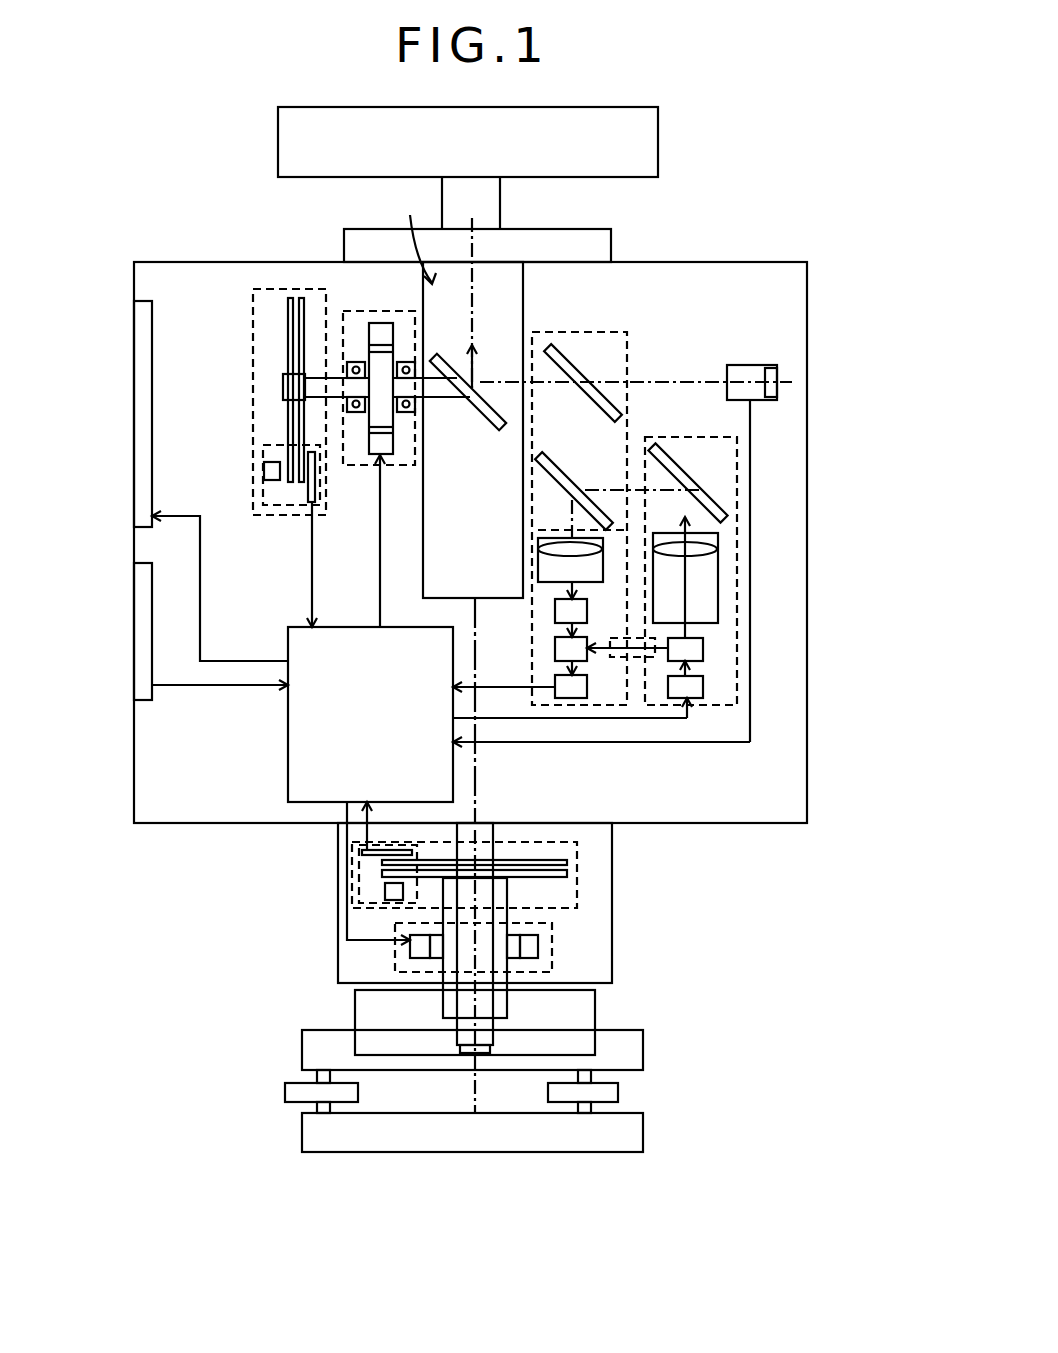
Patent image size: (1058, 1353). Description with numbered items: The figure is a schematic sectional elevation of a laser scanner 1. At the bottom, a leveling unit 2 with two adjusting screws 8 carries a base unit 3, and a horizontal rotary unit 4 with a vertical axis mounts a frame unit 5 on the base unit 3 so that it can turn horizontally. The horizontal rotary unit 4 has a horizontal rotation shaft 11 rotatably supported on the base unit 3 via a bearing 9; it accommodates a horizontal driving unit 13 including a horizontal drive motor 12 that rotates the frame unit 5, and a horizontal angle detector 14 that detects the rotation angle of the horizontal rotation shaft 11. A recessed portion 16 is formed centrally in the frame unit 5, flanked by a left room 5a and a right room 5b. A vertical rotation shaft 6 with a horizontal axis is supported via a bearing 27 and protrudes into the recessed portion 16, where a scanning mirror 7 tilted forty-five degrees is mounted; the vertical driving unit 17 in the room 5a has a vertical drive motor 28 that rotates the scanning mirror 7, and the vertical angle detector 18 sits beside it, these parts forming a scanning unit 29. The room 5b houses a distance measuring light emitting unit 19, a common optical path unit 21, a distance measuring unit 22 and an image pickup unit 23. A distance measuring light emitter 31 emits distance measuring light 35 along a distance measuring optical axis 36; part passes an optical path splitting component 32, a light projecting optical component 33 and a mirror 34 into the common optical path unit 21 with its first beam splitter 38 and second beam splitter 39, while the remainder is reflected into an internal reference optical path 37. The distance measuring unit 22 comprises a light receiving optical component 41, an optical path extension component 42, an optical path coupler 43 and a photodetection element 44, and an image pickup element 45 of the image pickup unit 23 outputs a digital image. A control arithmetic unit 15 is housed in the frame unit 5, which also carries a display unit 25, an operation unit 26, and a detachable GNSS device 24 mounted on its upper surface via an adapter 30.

The laser scanner 1 is at (158, 197).
The leveling unit 2 is at (268, 1093).
The base unit 3 is at (595, 1010).
The horizontal rotary unit 4 is at (612, 890).
The frame unit 5 is at (230, 823).
The room 5a is at (186, 312).
The room 5b is at (703, 312).
The vertical rotation shaft 6 is at (442, 398).
The scanning mirror 7 is at (448, 362).
The adjusting screws 8 is at (618, 1092).
The bearing 9 is at (507, 1000).
The horizontal rotation shaft 11 is at (452, 997).
The horizontal drive motor 12 is at (538, 945).
The horizontal driving unit 13 is at (552, 965).
The horizontal angle detector 14 is at (577, 866).
The control arithmetic unit 15 is at (288, 755).
The recessed portion 16 is at (455, 500).
The vertical driving unit 17 is at (385, 311).
The vertical angle detector 18 is at (253, 395).
The distance measuring light emitting unit 19 is at (737, 652).
The common optical path unit 21 is at (550, 332).
The distance measuring unit 22 is at (523, 590).
The image pickup unit 23 is at (760, 365).
The GNSS device 24 is at (658, 140).
The display unit 25 is at (134, 355).
The operation unit 26 is at (134, 630).
The bearing 27 is at (350, 407).
The vertical drive motor 28 is at (371, 323).
The scanning unit 29 is at (413, 231).
The adapter 30 is at (611, 240).
The distance measuring light emitter 31 is at (700, 662).
The optical path splitting component 32 is at (705, 690).
The light projecting optical component 33 is at (718, 557).
The mirror 34 is at (718, 480).
The distance measuring light 35 is at (702, 597).
The distance measuring optical axis 36 is at (477, 370).
The internal reference optical path 37 is at (630, 660).
The first beam splitter 38 is at (572, 460).
The second beam splitter 39 is at (575, 350).
The light receiving optical component 41 is at (538, 545).
The optical path extension component 42 is at (555, 610).
The optical path coupler 43 is at (555, 650).
The photodetection element 44 is at (560, 700).
The image pickup element 45 is at (760, 395).